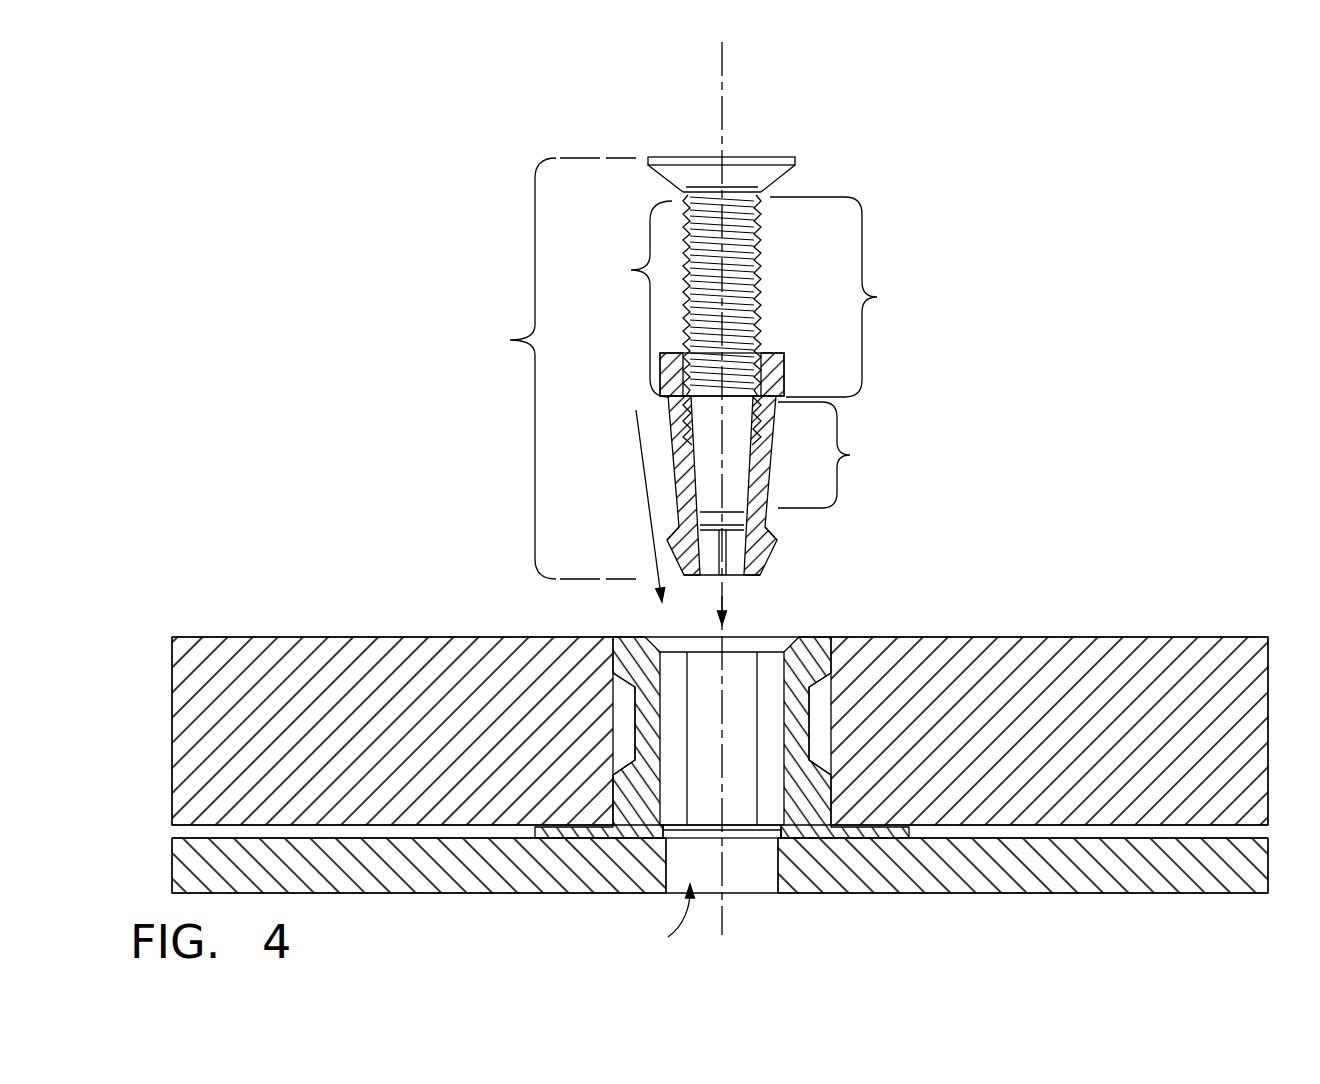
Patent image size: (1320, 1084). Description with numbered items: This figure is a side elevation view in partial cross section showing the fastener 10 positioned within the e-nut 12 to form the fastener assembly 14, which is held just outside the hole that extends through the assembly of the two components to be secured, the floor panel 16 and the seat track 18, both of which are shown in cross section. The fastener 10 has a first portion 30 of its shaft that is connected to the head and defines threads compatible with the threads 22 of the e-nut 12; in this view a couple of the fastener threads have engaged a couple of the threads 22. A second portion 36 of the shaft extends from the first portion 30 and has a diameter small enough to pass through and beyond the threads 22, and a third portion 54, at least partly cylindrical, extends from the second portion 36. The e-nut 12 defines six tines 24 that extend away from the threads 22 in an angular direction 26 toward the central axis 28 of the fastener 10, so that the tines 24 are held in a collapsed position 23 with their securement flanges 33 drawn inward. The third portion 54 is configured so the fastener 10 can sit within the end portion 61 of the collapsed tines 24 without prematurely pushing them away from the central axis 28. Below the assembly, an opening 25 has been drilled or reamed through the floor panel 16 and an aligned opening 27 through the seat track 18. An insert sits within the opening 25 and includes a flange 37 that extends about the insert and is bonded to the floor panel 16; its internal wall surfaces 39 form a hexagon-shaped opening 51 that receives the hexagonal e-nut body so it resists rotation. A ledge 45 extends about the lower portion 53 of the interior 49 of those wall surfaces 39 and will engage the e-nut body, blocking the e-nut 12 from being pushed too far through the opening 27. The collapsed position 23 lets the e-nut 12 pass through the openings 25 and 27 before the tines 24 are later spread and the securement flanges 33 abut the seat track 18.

The fastener 10 is at (897, 240).
The e-nut 12 is at (783, 345).
The fastener assembly 14 is at (510, 342).
The floor panel 16 is at (433, 672).
The seat track 18 is at (515, 865).
The threads 22 is at (770, 383).
The collapsed position 23 is at (757, 466).
The tine 24 is at (672, 480).
The opening 25 is at (732, 762).
The angular direction 26 is at (640, 452).
The opening 27 is at (661, 917).
The central axis 28 is at (724, 78).
The first portion 30 is at (631, 270).
The securement flange 33 is at (688, 553).
The second portion 36 is at (850, 455).
The flange 37 is at (605, 868).
The internal wall surfaces 39 is at (775, 677).
The ledge 45 is at (772, 826).
The interior 49 is at (752, 805).
The opening 51 is at (693, 695).
The lower portion 53 is at (680, 839).
The third portion 54 is at (786, 521).
The end portion 61 is at (764, 548).